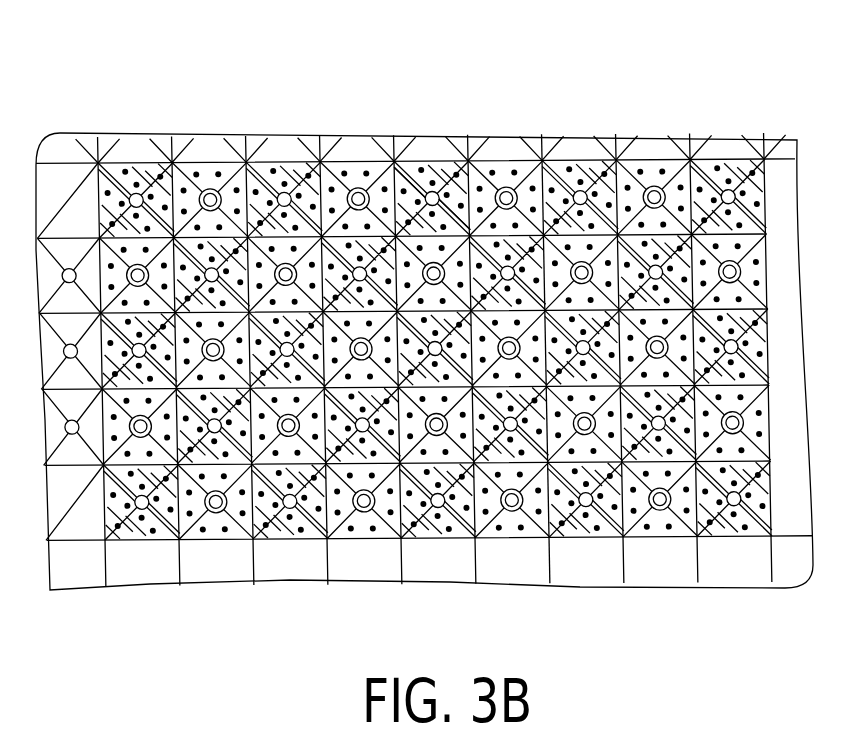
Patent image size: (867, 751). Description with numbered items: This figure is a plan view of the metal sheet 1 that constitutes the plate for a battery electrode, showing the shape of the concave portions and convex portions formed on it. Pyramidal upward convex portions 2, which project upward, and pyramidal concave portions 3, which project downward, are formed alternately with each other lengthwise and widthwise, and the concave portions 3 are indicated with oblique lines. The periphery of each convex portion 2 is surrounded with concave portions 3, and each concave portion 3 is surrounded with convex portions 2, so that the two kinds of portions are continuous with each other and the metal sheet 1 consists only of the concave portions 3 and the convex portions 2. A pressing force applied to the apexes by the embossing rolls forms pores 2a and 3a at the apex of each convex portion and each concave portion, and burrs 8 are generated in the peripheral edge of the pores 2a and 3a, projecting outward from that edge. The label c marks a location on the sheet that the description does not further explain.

The metal sheet 1 is at (665, 60).
The upward convex portion 2 is at (650, 172).
The pore 2a is at (717, 185).
The concave portion 3 is at (436, 189).
The pore 3a is at (428, 175).
The burr 8 is at (207, 188).
The grid intersection c is at (541, 160).